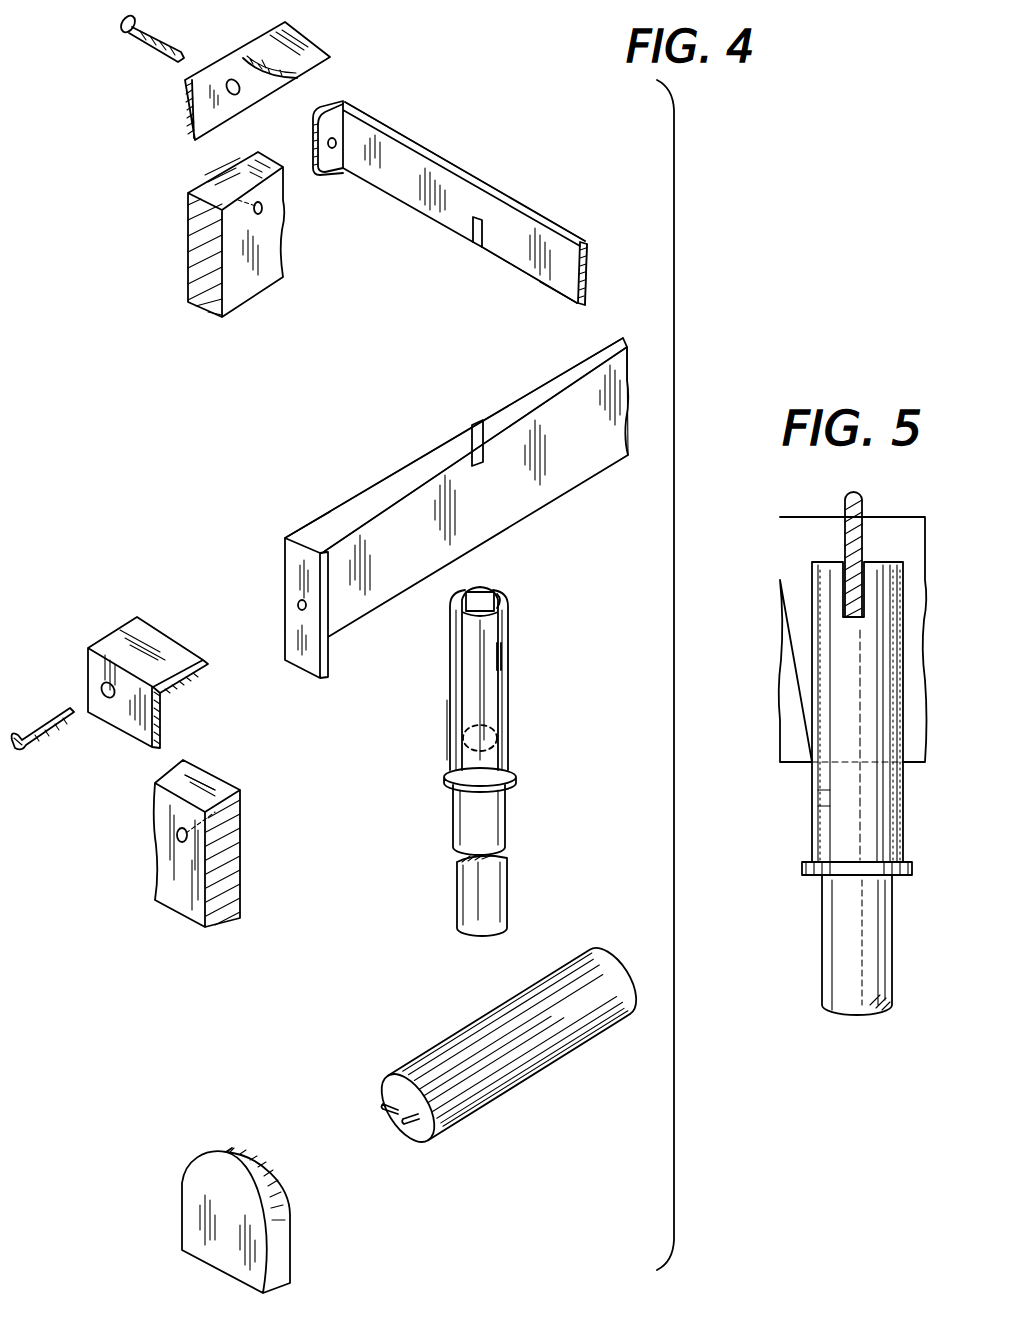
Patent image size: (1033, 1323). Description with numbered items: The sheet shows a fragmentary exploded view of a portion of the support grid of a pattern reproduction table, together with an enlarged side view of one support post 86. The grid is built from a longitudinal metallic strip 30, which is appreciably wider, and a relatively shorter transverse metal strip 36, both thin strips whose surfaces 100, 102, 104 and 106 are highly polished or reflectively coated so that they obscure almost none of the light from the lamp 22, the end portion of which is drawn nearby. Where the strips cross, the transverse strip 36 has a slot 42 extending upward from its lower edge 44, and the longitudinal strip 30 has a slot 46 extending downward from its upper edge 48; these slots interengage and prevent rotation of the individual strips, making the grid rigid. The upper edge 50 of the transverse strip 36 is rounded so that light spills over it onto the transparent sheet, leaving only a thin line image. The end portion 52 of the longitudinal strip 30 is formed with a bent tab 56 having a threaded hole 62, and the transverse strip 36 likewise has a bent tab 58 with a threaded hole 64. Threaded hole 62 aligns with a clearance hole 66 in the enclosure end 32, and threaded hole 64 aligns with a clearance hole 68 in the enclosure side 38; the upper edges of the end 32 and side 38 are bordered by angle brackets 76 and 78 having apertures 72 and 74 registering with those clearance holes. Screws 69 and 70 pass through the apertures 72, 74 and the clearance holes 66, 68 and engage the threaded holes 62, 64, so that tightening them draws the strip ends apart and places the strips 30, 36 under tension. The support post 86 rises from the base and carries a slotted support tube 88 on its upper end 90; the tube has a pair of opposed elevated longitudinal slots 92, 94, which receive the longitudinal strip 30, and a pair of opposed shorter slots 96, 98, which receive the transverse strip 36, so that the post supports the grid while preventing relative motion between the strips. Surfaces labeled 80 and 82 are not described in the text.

In FIG. 4, the lamp 22 is at (495, 1095).
In FIG. 4, the longitudinal metallic strip 30 is at (386, 500).
In FIG. 4, the end of enclosure 32 is at (165, 870).
In FIG. 4, the transverse metal strip 36 is at (426, 203).
In FIG. 5, the transverse metal strip 36 is at (857, 532).
In FIG. 4, the side of enclosure 38 is at (245, 295).
In FIG. 4, the slot 42 is at (470, 226).
In FIG. 4, the lower edge 44 is at (500, 258).
In FIG. 4, the slot 46 is at (472, 428).
In FIG. 4, the upper edge 48 is at (515, 410).
In FIG. 5, the upper edge 48 is at (808, 517).
In FIG. 4, the upper edge 50 is at (404, 150).
In FIG. 5, the upper edge 50 is at (847, 493).
In FIG. 4, the end portion 52 is at (324, 528).
In FIG. 4, the bent tab 56 is at (292, 577).
In FIG. 4, the bent tab 58 is at (332, 170).
In FIG. 4, the threaded hole 62 is at (297, 606).
In FIG. 4, the threaded hole 64 is at (327, 143).
In FIG. 4, the clearance hole 66 is at (176, 835).
In FIG. 4, the clearance hole 68 is at (264, 208).
In FIG. 4, the screw 69 is at (45, 720).
In FIG. 4, the screw 70 is at (133, 44).
In FIG. 4, the aperture 72 is at (102, 687).
In FIG. 4, the aperture 74 is at (233, 79).
In FIG. 4, the angle bracket 76 is at (125, 640).
In FIG. 4, the angle bracket 78 is at (185, 111).
In FIG. 4, the top surface 80 is at (212, 783).
In FIG. 4, the top surface 82 is at (235, 194).
In FIG. 4, the support post 86 is at (508, 870).
In FIG. 5, the support post 86 is at (822, 930).
In FIG. 4, the slotted support tube 88 is at (508, 700).
In FIG. 5, the slotted support tube 88 is at (812, 660).
In FIG. 4, the upper end 90 is at (505, 742).
In FIG. 5, the upper end 90 is at (822, 798).
In FIG. 4, the longitudinal slot 92 is at (460, 652).
In FIG. 4, the longitudinal slot 94 is at (499, 592).
In FIG. 4, the shorter slot 96 is at (466, 588).
In FIG. 4, the shorter slot 98 is at (506, 655).
In FIG. 4, the surface 100 is at (412, 468).
In FIG. 4, the surface 102 is at (583, 477).
In FIG. 4, the surface 104 is at (575, 298).
In FIG. 4, the surface 106 is at (590, 265).